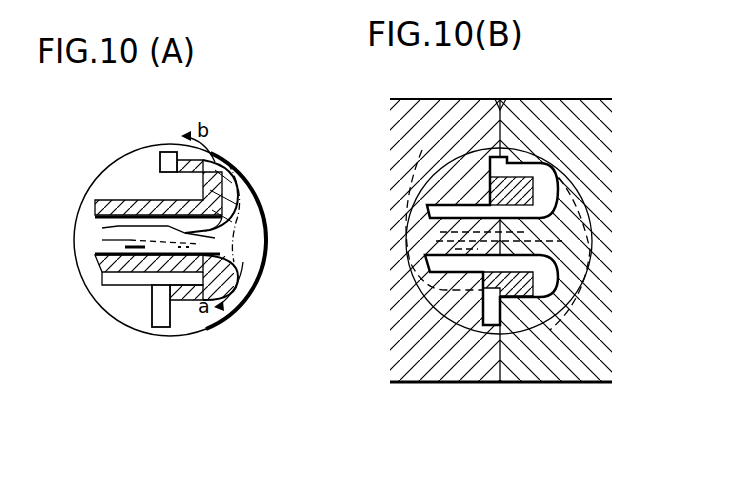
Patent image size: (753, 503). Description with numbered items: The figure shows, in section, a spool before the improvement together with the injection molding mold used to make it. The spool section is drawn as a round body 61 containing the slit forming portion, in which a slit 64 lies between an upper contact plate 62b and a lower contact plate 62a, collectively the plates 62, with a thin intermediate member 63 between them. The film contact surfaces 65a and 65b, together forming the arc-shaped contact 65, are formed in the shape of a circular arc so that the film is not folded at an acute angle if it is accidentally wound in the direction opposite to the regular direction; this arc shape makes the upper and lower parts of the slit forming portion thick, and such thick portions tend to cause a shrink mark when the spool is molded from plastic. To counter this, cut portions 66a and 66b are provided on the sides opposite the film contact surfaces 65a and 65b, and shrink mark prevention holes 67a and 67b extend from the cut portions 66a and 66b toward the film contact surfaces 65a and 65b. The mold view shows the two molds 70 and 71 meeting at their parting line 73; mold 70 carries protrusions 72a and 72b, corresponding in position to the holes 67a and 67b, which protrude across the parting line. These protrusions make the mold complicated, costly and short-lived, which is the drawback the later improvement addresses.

The contact assembly housing ring 61 is at (97, 170).
The contact plates 62 is at (213, 225).
The lower contact plate 62a is at (97, 252).
The upper contact plate 62b is at (97, 207).
The intermediate leaf member 63 is at (100, 233).
The contact trace line 64 is at (222, 230).
The resilient contact spring 65 is at (244, 264).
The film contact surface 65a is at (237, 284).
The film contact surface 65b is at (240, 178).
The cut portion 66a is at (133, 290).
The cut portion 66b is at (133, 167).
The shrink mark prevention hole 67a is at (193, 280).
The shrink mark prevention hole 67b is at (173, 180).
The mold 70 is at (427, 110).
The mold 71 is at (573, 117).
The protrusion 72a is at (526, 300).
The protrusion 72b is at (555, 186).
The parting line 73 is at (503, 110).